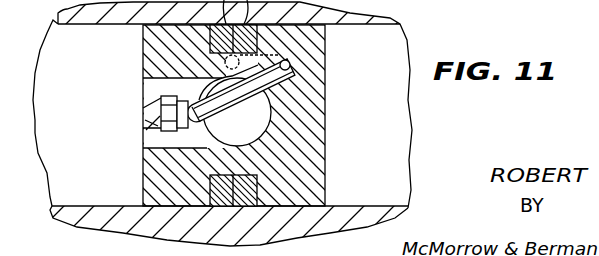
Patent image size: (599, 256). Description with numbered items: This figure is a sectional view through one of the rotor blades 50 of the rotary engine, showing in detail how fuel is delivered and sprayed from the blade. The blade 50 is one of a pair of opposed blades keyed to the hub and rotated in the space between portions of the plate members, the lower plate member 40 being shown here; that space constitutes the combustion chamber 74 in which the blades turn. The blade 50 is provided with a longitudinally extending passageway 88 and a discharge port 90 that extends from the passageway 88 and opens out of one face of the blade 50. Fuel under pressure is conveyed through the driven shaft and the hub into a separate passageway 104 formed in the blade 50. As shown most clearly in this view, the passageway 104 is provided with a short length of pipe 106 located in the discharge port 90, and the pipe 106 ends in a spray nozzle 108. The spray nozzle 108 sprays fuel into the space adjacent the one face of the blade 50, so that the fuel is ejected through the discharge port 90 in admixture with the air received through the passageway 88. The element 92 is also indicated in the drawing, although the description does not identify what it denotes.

The lower plate member 40 is at (348, 226).
The rotor blade 50 is at (317, 127).
The combustion chamber 74 is at (397, 57).
The passageway 88 is at (258, 130).
The discharge port 90 is at (143, 91).
The conduit 92 is at (553, 0).
The passageway 104 is at (312, 63).
The pipe 106 is at (199, 123).
The spray nozzle 108 is at (143, 128).